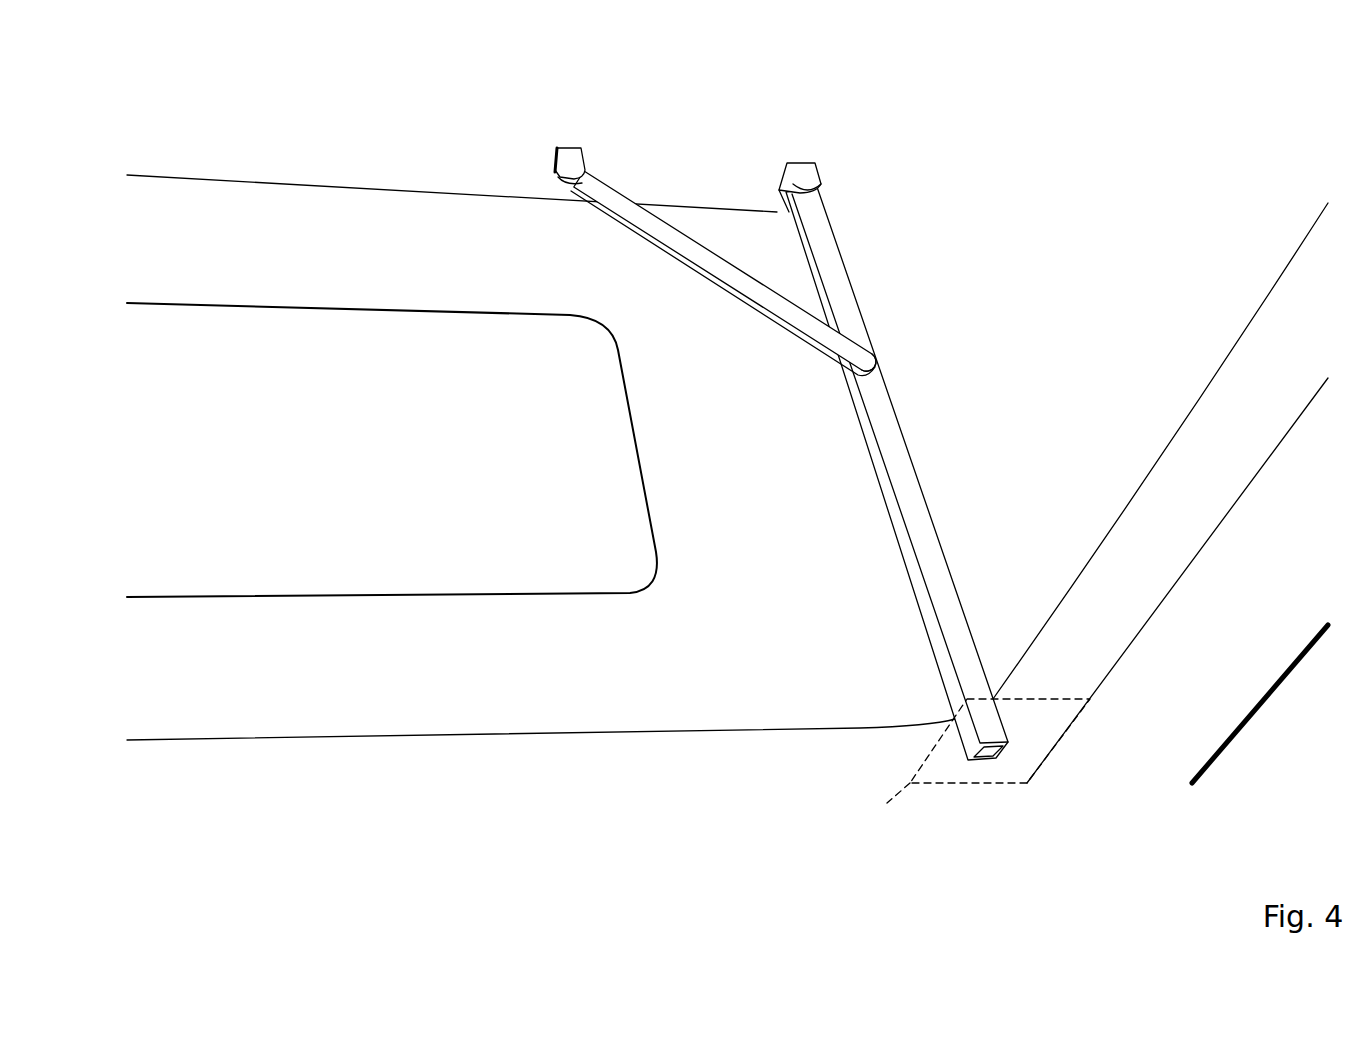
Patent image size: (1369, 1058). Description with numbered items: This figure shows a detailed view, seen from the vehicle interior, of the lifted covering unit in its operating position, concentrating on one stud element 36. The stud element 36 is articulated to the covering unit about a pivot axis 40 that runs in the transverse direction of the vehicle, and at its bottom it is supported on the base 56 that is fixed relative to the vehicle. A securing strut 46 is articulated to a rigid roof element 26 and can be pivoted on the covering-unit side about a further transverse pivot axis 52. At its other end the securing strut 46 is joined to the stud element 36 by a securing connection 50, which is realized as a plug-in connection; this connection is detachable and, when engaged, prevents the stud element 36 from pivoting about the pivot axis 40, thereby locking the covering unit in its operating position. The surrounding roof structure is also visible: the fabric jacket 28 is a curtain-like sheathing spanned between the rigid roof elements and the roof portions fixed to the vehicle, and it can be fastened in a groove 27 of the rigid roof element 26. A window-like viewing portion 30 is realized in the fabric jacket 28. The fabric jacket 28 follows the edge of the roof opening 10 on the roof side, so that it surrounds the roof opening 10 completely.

The roof opening 10 is at (1170, 448).
The rigid roof element 26 is at (458, 55).
The groove 27 is at (373, 189).
The fabric jacket 28 is at (1030, 175).
The viewing portion 30 is at (266, 304).
The stud element 36 is at (922, 510).
The pivot axis 40 is at (768, 265).
The securing strut 46 is at (712, 252).
The securing connection 50 is at (877, 358).
The pivot axis 52 is at (535, 250).
The base 56 is at (910, 773).